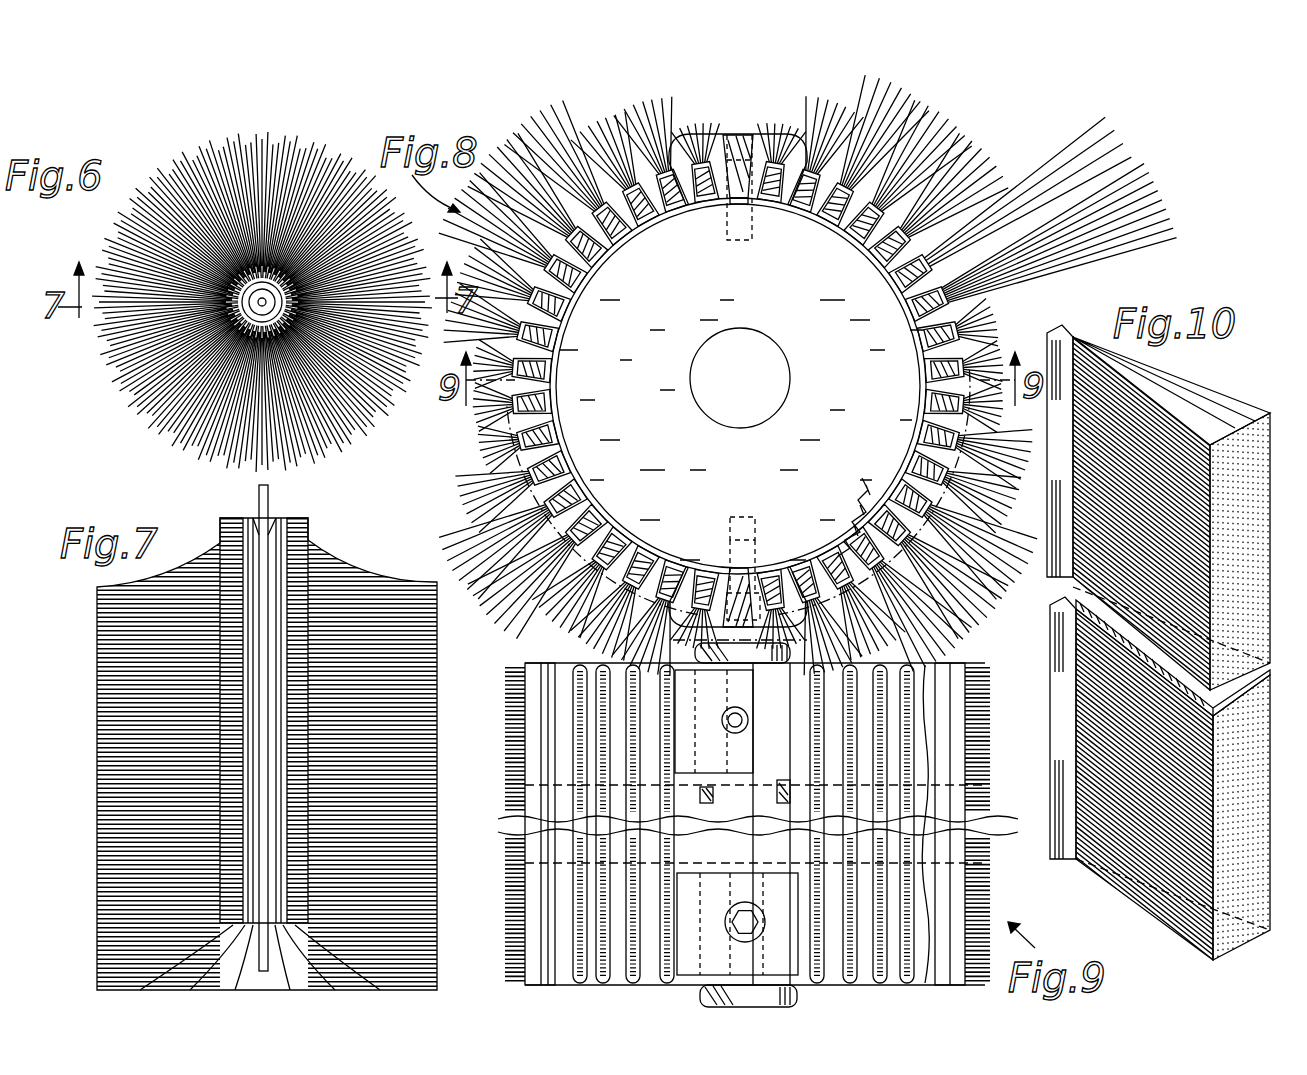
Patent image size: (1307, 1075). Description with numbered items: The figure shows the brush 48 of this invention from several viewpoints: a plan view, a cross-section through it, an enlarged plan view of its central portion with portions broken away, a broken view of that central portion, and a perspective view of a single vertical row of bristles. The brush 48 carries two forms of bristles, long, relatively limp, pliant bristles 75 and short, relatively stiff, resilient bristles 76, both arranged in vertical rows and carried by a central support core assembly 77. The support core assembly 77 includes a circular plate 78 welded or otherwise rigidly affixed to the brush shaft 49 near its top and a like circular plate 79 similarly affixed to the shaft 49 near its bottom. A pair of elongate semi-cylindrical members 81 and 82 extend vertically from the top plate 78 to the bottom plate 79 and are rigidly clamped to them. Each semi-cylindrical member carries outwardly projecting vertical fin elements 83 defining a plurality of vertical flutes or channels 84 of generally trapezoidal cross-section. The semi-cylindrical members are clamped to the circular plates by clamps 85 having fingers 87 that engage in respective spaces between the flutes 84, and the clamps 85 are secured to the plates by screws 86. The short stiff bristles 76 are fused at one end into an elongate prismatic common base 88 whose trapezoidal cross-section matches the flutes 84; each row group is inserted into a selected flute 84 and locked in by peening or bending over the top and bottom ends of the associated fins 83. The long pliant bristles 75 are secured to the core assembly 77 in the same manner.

In FIG. 6, the brush 48 is at (248, 302).
In FIG. 7, the brush 48 is at (239, 725).
In FIG. 8, the brush 48 is at (839, 375).
In FIG. 6, the brush shaft 49 is at (263, 282).
In FIG. 7, the brush shaft 49 is at (266, 487).
In FIG. 8, the brush shaft 49 is at (773, 362).
In FIG. 9, the brush shaft 49 is at (696, 652).
In FIG. 6, the long pliant bristles 75 is at (380, 256).
In FIG. 7, the long pliant bristles 75 is at (378, 584).
In FIG. 8, the long pliant bristles 75 is at (470, 237).
In FIG. 9, the long pliant bristles 75 is at (668, 947).
In FIG. 6, the short stiff bristles 76 is at (205, 264).
In FIG. 7, the short stiff bristles 76 is at (304, 518).
In FIG. 8, the short stiff bristles 76 is at (560, 152).
In FIG. 9, the short stiff bristles 76 is at (966, 805).
In FIG. 10, the short stiff bristles 76 is at (1240, 403).
In FIG. 7, the central support core assembly 77 is at (244, 504).
In FIG. 8, the central support core assembly 77 is at (605, 568).
In FIG. 9, the central support core assembly 77 is at (941, 648).
In FIG. 7, the circular plate 78 is at (254, 513).
In FIG. 8, the circular plate 78 is at (660, 407).
In FIG. 9, the circular plate 78 is at (863, 663).
In FIG. 7, the circular plate 79 is at (260, 963).
In FIG. 8, the circular plate 79 is at (858, 480).
In FIG. 9, the circular plate 79 is at (880, 981).
In FIG. 7, the semi-cylindrical member 81 is at (250, 593).
In FIG. 8, the semi-cylindrical member 81 is at (553, 367).
In FIG. 7, the semi-cylindrical member 82 is at (306, 544).
In FIG. 8, the semi-cylindrical member 82 is at (925, 368).
In FIG. 8, the vertical fin elements 83 is at (940, 300).
In FIG. 9, the vertical fin elements 83 is at (590, 665).
In FIG. 8, the vertical flutes 84 is at (577, 518).
In FIG. 9, the vertical flutes 84 is at (533, 663).
In FIG. 8, the clamp 85 is at (748, 190).
In FIG. 9, the clamp 85 is at (690, 994).
In FIG. 8, the screw 86 is at (728, 232).
In FIG. 9, the screw 86 is at (749, 716).
In FIG. 8, the fingers 87 is at (706, 192).
In FIG. 8, the prismatic common base 88 is at (945, 466).
In FIG. 9, the prismatic common base 88 is at (953, 886).
In FIG. 10, the prismatic common base 88 is at (1083, 308).